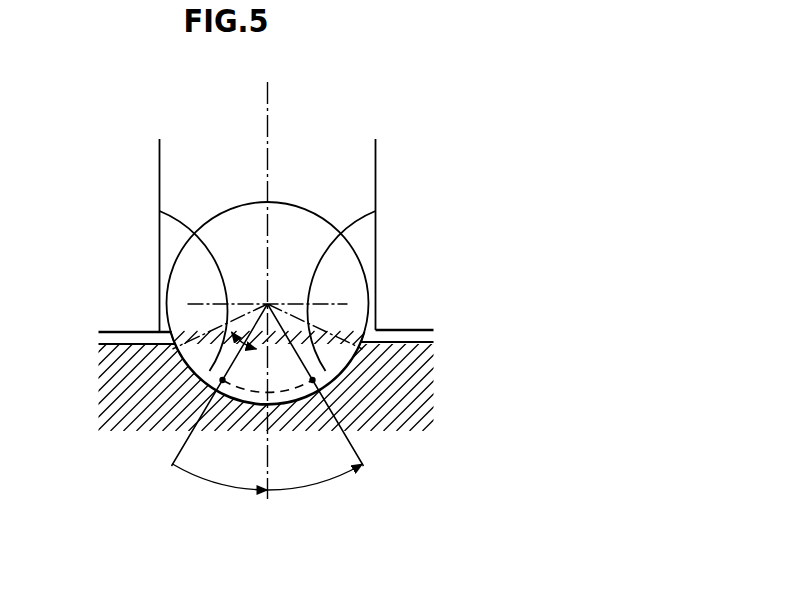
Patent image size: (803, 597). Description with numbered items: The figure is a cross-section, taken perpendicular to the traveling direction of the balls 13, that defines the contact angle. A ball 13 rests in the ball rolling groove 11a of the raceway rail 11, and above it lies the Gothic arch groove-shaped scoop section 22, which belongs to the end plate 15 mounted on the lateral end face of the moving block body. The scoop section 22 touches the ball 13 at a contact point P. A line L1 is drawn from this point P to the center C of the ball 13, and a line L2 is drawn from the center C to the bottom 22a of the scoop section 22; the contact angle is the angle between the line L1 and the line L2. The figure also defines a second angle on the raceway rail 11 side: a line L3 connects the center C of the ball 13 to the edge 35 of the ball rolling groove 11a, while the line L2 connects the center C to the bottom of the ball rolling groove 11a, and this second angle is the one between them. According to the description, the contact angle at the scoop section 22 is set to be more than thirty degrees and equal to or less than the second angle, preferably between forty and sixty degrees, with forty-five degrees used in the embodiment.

The raceway rail 11 is at (387, 359).
The ball rolling groove 11a is at (166, 358).
The ball 13 is at (302, 238).
The end plate 15 is at (387, 316).
The scoop section 22 is at (318, 344).
The bottom of the scoop section 22a is at (379, 217).
The edge of the ball rolling groove 35 is at (175, 350).
The center of the ball C is at (267, 305).
The contact point P is at (224, 383).
The line L1 is at (198, 339).
The line L2 is at (267, 150).
The line L3 is at (242, 323).